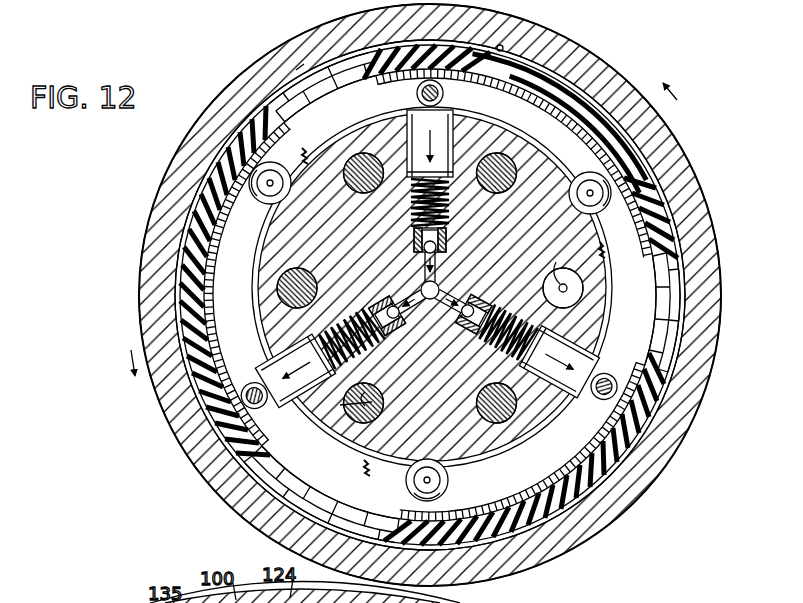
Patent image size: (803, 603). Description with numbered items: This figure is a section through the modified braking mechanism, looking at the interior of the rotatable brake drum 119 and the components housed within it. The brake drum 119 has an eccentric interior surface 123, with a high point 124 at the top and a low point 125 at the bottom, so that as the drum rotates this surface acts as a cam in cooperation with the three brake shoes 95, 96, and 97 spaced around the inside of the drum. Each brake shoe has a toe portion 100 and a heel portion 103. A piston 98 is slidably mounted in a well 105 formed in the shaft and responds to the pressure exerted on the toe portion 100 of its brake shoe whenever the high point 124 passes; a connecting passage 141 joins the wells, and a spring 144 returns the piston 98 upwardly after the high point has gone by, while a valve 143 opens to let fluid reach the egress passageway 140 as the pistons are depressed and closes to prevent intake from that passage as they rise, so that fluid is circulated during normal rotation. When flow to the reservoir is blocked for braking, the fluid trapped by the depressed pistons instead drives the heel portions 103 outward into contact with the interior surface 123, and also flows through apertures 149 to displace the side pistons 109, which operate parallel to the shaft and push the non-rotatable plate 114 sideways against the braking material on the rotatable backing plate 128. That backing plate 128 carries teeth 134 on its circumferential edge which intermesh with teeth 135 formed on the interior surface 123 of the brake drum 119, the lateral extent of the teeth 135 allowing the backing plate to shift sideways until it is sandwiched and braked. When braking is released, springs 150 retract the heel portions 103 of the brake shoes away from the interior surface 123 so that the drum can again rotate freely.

The brake shoe 95 is at (562, 144).
The brake shoe 96 is at (531, 481).
The brake shoe 97 is at (238, 325).
The piston 98 is at (418, 96).
The toe portion 100 is at (664, 355).
The heel portion 103 is at (258, 128).
The well 105 is at (452, 210).
The side piston 109 is at (350, 178).
The plate 114 is at (370, 113).
The brake drum 119 is at (598, 52).
The eccentric interior surface 123 is at (668, 290).
The high point 124 is at (520, 14).
The low point 125 is at (418, 548).
The backing plate 128 is at (300, 72).
The teeth 134 is at (292, 90).
The teeth 135 is at (330, 92).
The egress passageway 140 is at (441, 283).
The connecting passage 141 is at (413, 201).
The valve 143 is at (445, 250).
The spring 144 is at (412, 230).
The aperture 149 is at (562, 280).
The spring 150 is at (312, 154).